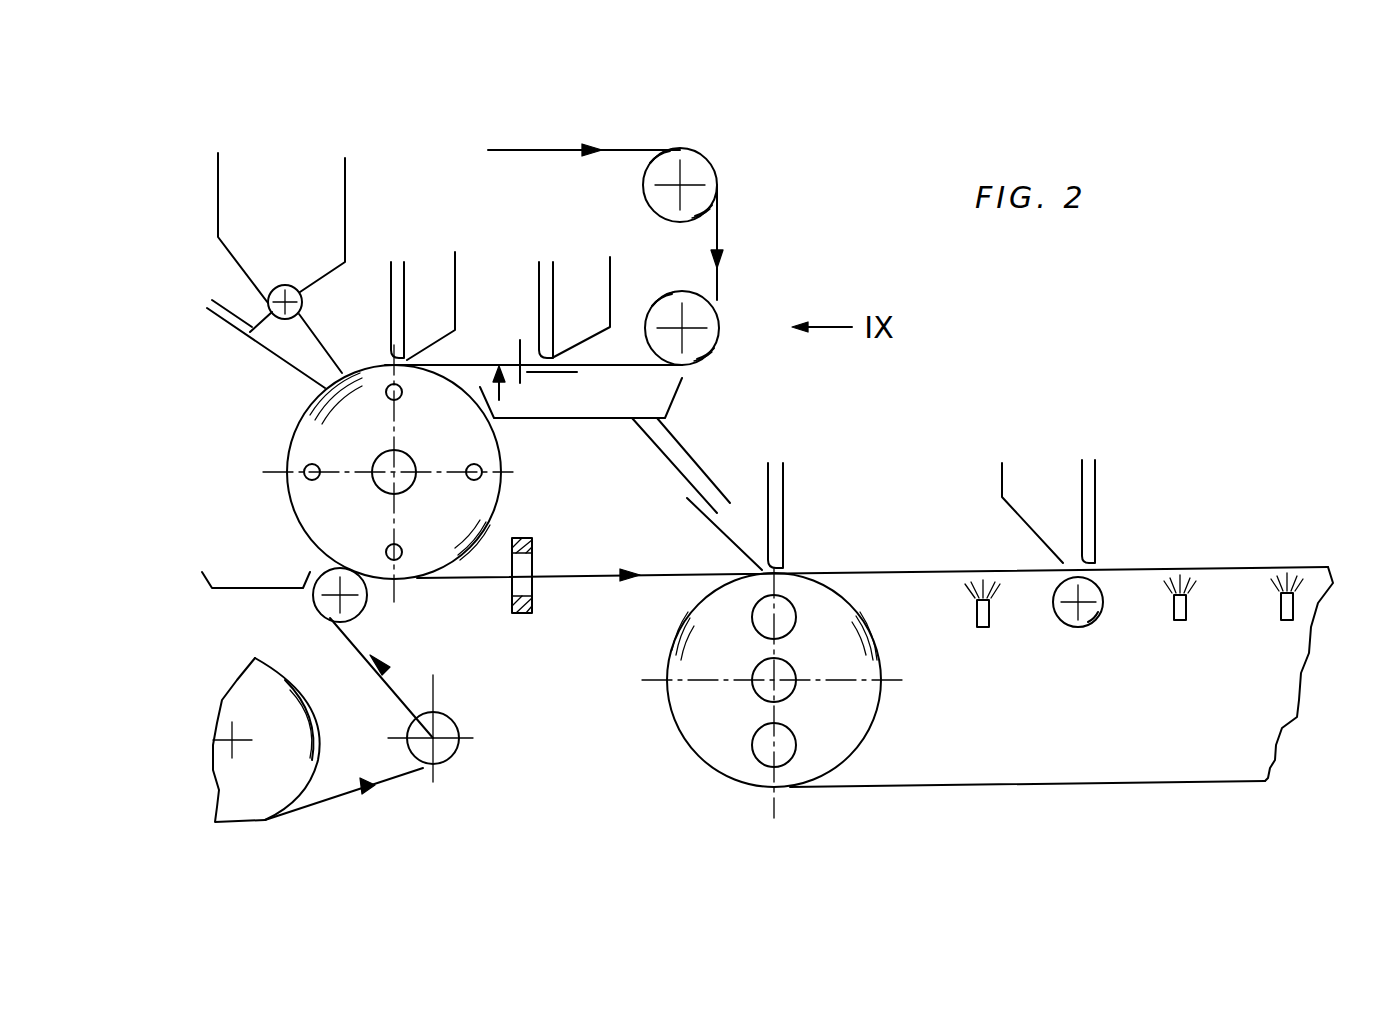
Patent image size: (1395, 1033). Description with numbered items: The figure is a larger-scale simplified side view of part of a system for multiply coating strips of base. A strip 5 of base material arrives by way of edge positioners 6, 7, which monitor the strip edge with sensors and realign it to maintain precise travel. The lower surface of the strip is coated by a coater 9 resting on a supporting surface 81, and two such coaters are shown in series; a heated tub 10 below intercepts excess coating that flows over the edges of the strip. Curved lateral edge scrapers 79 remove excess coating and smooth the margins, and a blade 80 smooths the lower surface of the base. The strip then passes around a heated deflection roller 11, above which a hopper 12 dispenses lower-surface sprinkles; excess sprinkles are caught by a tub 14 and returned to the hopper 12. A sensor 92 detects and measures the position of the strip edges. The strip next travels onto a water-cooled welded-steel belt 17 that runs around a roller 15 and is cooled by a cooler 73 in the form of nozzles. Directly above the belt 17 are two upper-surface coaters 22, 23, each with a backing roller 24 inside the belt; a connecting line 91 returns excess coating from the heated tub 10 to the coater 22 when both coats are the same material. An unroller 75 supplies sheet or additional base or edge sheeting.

The strip 5 is at (627, 148).
The positioner 6 is at (700, 175).
The positioner 7 is at (700, 312).
The coater 9 is at (433, 282).
The heated tub 10 is at (675, 397).
The heated deflection roller 11 is at (317, 432).
The hopper 12 is at (240, 193).
The tub 14 is at (237, 587).
The roller 15 is at (730, 752).
The water-cooled welded-steel belt 17 is at (1038, 787).
The coater 22 is at (740, 525).
The coater 23 is at (1058, 492).
The backing roller 24 is at (1087, 610).
The cooler 73 is at (978, 617).
The unroller 75 is at (248, 800).
The lateral edge scraper 79 is at (518, 348).
The blade 80 is at (505, 393).
The supporting surface 81 is at (562, 373).
The connecting line 91 is at (698, 467).
The sensor 92 is at (523, 613).